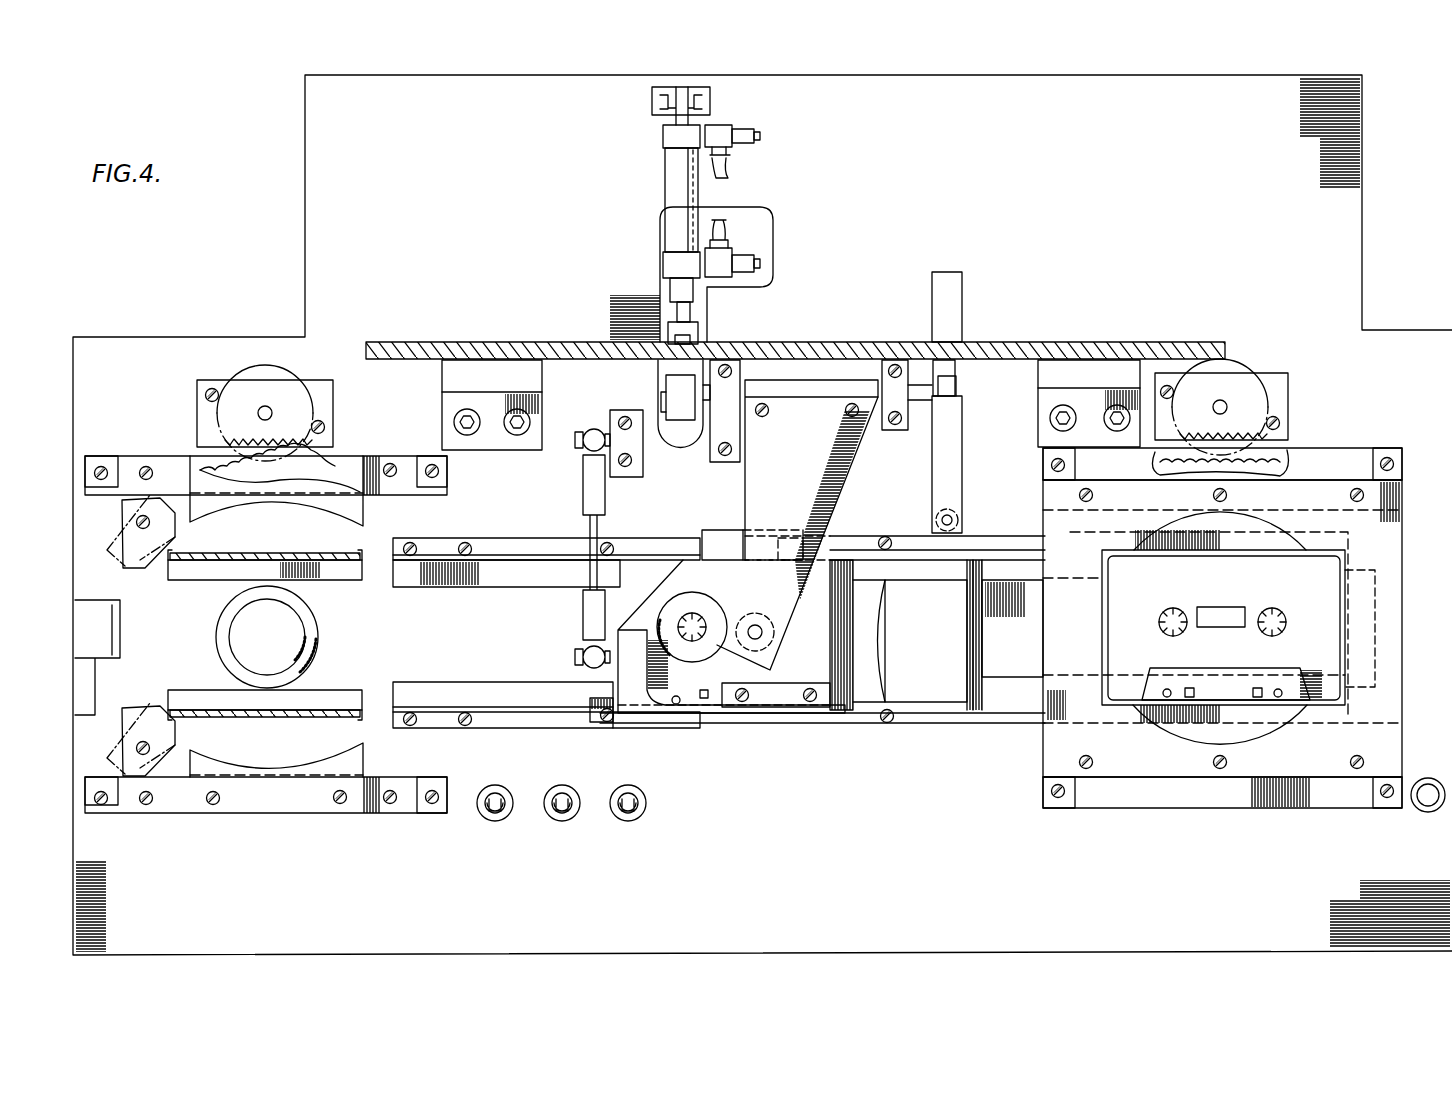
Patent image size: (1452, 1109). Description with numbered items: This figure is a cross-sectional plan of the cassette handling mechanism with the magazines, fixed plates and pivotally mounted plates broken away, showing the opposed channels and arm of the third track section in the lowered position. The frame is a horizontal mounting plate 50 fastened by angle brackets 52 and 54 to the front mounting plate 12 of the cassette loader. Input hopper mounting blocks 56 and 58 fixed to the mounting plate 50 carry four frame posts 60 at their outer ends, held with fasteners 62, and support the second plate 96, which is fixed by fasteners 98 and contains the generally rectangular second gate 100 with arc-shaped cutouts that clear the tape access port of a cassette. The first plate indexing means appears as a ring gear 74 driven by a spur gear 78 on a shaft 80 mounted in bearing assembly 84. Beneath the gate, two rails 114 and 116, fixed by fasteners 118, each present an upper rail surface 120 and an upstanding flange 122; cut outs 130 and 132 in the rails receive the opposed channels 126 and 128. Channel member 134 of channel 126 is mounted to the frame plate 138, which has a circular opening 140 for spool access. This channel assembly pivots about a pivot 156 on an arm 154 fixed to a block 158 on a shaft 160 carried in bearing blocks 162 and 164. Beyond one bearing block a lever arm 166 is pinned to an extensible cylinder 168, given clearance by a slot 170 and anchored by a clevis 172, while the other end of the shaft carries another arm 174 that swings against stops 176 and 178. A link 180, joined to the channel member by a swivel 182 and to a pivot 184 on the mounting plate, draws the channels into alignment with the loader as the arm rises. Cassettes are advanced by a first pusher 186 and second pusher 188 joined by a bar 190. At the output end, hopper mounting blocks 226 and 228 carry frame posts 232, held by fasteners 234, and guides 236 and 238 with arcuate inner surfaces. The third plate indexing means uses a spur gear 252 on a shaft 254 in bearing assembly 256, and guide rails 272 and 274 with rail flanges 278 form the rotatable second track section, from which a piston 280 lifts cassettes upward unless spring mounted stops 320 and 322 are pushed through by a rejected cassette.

The front mounting plate 12 is at (1010, 343).
The mounting plate 50 is at (1350, 233).
The angle bracket 52 is at (482, 375).
The angle bracket 54 is at (1102, 360).
The input hopper mounting block 56 is at (1340, 449).
The input hopper mounting block 58 is at (1350, 810).
The frame posts 60 is at (1066, 796).
The fasteners 62 is at (1390, 458).
The ring gear 74 is at (1282, 470).
The spur gear 78 is at (1236, 368).
The shaft 80 is at (1220, 401).
The bearing assembly 84 is at (1288, 387).
The second plate 96 is at (1405, 518).
The fasteners 98 is at (1100, 495).
The second gate 100 is at (1112, 612).
The rail 114 is at (542, 550).
The rail 116 is at (520, 730).
The fasteners 118 is at (882, 537).
The upper rail surface 120 is at (512, 585).
The upstanding flange 122 is at (493, 538).
The channel 126 is at (800, 710).
The channel 128 is at (718, 530).
The cut out 130 is at (596, 725).
The cut out 132 is at (790, 535).
The channel member 134 is at (663, 715).
The frame plate 138 is at (830, 610).
The circular opening 140 is at (700, 584).
The arm 154 is at (833, 400).
The pivot 156 is at (750, 612).
The block 158 is at (792, 382).
The shaft 160 is at (920, 415).
The bearing block 162 is at (731, 362).
The bearing block 164 is at (892, 340).
The lever arm 166 is at (665, 388).
The extensible cylinder 168 is at (668, 178).
The slot 170 is at (775, 222).
The clevis 172 is at (712, 100).
The arm 174 is at (963, 432).
The stop 176 is at (948, 274).
The stop 178 is at (958, 512).
The link 180 is at (597, 530).
The swivel 182 is at (572, 658).
The pivot 184 is at (578, 445).
The first pusher 186 is at (1390, 612).
The second pusher 188 is at (925, 690).
The bar 190 is at (1013, 672).
The hopper mounting block 226 is at (372, 492).
The hopper mounting block 228 is at (385, 782).
The frame posts 232 is at (445, 815).
The fasteners 234 is at (428, 805).
The guide 236 is at (312, 518).
The guide 238 is at (262, 820).
The spur gear 252 is at (288, 372).
The shaft 254 is at (262, 410).
The bearing assembly 256 is at (330, 397).
The guide rail 272 is at (362, 582).
The guide rail 274 is at (365, 706).
The rail flange 278 is at (198, 582).
The piston 280 is at (312, 636).
The spring mounted stop 320 is at (136, 566).
The spring mounted stop 322 is at (150, 705).